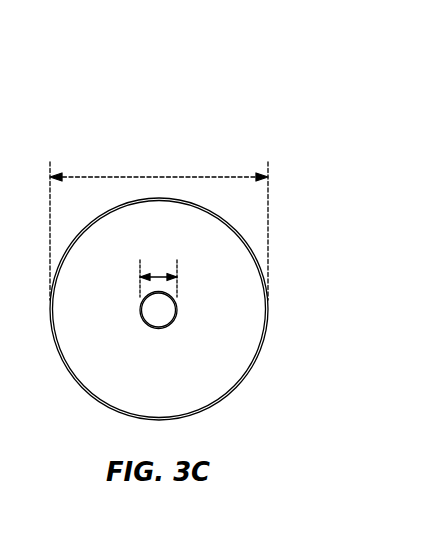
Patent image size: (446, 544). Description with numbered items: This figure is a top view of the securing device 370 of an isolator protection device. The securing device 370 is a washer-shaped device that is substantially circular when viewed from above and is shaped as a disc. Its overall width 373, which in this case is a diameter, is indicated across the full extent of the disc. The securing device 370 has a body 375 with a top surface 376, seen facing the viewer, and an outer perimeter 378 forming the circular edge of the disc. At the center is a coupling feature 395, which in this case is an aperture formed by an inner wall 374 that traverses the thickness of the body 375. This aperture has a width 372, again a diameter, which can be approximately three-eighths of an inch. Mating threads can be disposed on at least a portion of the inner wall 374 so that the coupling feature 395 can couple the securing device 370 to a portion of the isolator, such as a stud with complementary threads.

The securing device 370 is at (220, 138).
The width 372 is at (163, 274).
The width 373 is at (165, 177).
The inner wall 374 is at (164, 329).
The body 375 is at (252, 322).
The top surface 376 is at (135, 370).
The outer perimeter 378 is at (240, 384).
The coupling feature 395 is at (161, 311).